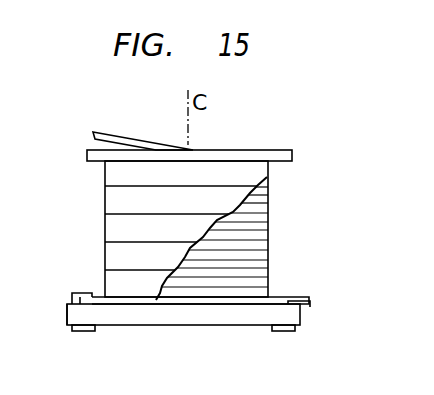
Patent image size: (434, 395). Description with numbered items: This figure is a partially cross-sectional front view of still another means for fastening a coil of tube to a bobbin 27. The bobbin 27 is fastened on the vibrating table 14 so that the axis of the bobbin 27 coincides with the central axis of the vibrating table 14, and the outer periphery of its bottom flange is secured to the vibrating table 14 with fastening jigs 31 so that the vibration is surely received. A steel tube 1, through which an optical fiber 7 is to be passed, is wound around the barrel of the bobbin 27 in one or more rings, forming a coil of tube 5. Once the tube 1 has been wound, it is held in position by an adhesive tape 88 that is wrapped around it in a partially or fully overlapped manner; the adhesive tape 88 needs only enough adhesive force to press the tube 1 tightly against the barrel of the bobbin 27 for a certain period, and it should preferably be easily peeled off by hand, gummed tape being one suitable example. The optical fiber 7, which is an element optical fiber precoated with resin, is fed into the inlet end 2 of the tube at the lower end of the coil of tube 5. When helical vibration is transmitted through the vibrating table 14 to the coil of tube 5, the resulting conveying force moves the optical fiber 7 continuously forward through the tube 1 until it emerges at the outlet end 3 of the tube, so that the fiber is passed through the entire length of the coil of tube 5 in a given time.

The tube 1 is at (296, 297).
The inlet end of the tube 2 is at (300, 310).
The outlet end of the tube 3 is at (108, 131).
The coil of tube 5 is at (270, 228).
The optical fiber 7 is at (310, 303).
The vibrating table 14 is at (67, 310).
The bobbin 27 is at (274, 151).
The fastening jig 31 is at (72, 293).
The adhesive tape 88 is at (105, 200).